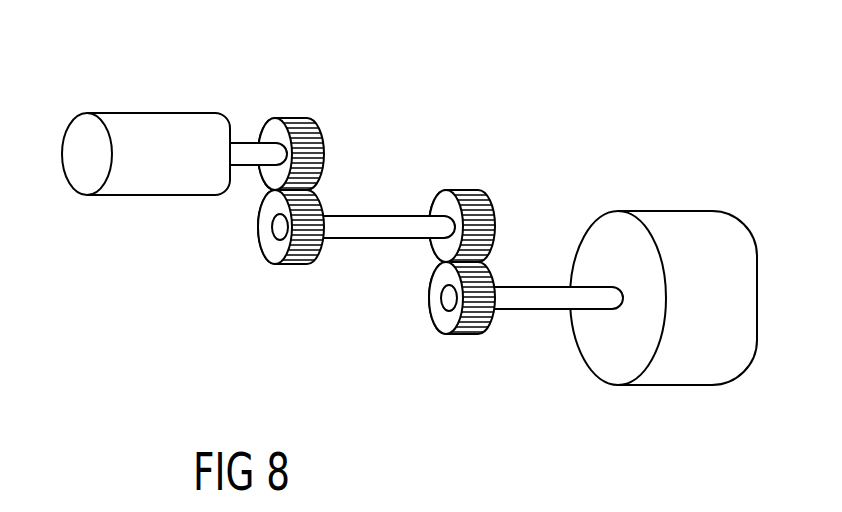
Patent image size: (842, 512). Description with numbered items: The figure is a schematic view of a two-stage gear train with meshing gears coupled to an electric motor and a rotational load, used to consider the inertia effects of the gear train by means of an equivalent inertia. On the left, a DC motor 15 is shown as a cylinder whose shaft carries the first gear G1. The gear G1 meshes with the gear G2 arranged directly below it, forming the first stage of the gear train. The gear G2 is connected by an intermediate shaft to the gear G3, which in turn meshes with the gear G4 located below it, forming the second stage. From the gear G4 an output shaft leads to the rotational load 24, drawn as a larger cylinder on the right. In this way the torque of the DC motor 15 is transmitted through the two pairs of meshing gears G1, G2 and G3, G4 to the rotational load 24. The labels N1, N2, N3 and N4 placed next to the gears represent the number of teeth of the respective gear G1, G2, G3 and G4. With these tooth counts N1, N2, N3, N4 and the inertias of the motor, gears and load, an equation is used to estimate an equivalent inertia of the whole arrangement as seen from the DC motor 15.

The DC motor 15 is at (155, 143).
The rotational load 24 is at (687, 233).
The gear G1 is at (300, 102).
The gear G2 is at (278, 279).
The gear G3 is at (466, 175).
The gear G4 is at (449, 345).
The number of teeth N1 is at (289, 131).
The number of teeth N2 is at (302, 263).
The number of teeth N3 is at (457, 206).
The number of teeth N4 is at (475, 335).